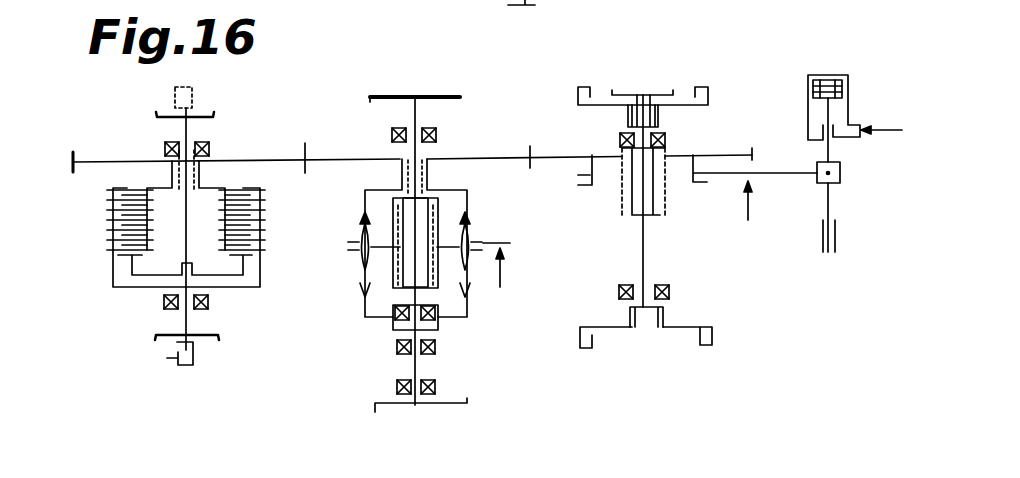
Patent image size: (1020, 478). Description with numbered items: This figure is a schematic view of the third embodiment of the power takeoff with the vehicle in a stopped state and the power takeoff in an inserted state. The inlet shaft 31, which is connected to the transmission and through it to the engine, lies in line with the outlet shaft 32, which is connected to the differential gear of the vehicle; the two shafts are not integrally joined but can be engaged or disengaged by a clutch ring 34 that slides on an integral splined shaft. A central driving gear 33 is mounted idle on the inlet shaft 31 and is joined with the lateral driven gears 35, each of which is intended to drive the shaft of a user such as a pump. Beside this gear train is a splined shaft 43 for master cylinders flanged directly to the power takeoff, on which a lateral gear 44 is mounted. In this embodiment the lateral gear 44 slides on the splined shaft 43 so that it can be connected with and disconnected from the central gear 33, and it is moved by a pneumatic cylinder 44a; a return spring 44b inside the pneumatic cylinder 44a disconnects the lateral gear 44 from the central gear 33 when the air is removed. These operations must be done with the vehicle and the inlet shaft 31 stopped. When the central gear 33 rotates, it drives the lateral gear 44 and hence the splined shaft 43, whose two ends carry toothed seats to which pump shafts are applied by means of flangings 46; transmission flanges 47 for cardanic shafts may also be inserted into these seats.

The inlet shaft 31 is at (370, 98).
The outlet shaft 32 is at (413, 402).
The central driving gear 33 is at (463, 152).
The clutch ring 34 is at (362, 242).
The lateral driven gear 35 is at (140, 158).
The splined shaft 43 is at (645, 238).
The lateral gear 44 is at (698, 152).
The pneumatic cylinder 44a is at (852, 85).
The return spring 44b is at (825, 85).
The flanging 46 is at (710, 83).
The transmission flange 47 is at (630, 95).